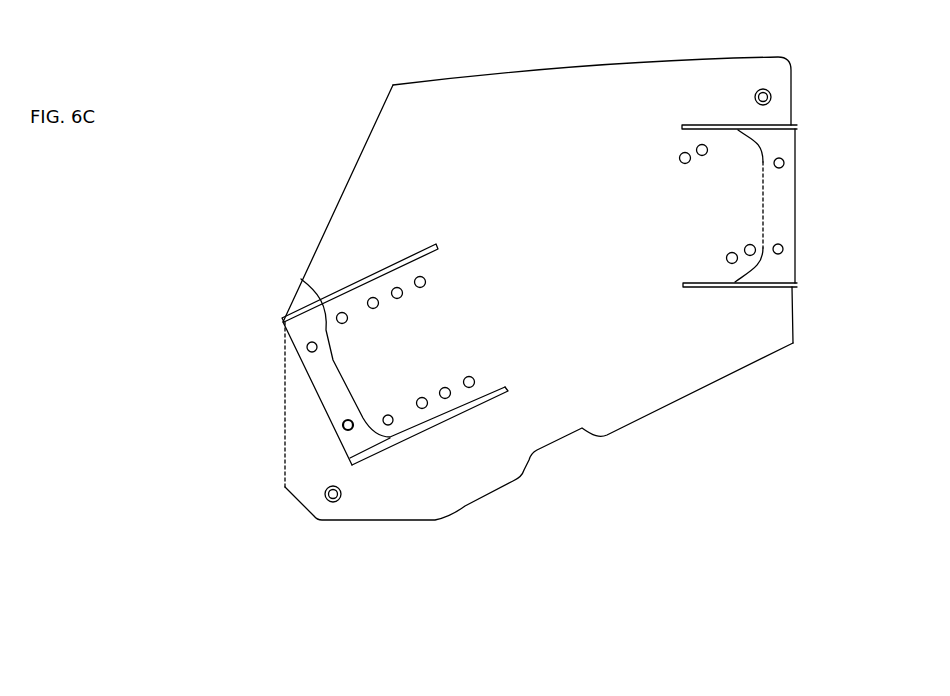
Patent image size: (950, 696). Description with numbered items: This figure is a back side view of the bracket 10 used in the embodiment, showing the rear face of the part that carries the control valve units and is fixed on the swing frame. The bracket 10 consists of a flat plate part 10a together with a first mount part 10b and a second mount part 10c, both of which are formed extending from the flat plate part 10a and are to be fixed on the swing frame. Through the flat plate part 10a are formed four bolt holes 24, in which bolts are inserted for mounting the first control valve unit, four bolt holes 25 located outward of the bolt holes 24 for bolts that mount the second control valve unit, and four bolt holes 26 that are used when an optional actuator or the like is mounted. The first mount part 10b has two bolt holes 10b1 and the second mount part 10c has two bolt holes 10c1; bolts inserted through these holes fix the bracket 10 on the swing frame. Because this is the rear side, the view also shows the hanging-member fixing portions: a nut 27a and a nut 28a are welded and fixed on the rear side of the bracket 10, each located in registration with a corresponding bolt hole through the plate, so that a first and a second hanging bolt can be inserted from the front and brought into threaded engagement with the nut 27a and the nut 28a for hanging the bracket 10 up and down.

The bracket 10 is at (385, 100).
The flat plate part 10a is at (367, 173).
The first mount part 10b is at (327, 385).
The bolt holes 10b1 is at (306, 347).
The second mount part 10c is at (780, 202).
The bolt holes 10c1 is at (784, 160).
The bolt holes 24 is at (415, 278).
The bolt holes 25 is at (393, 290).
The bolt holes 26 is at (369, 300).
The nut 27a is at (324, 496).
The nut 28a is at (765, 88).